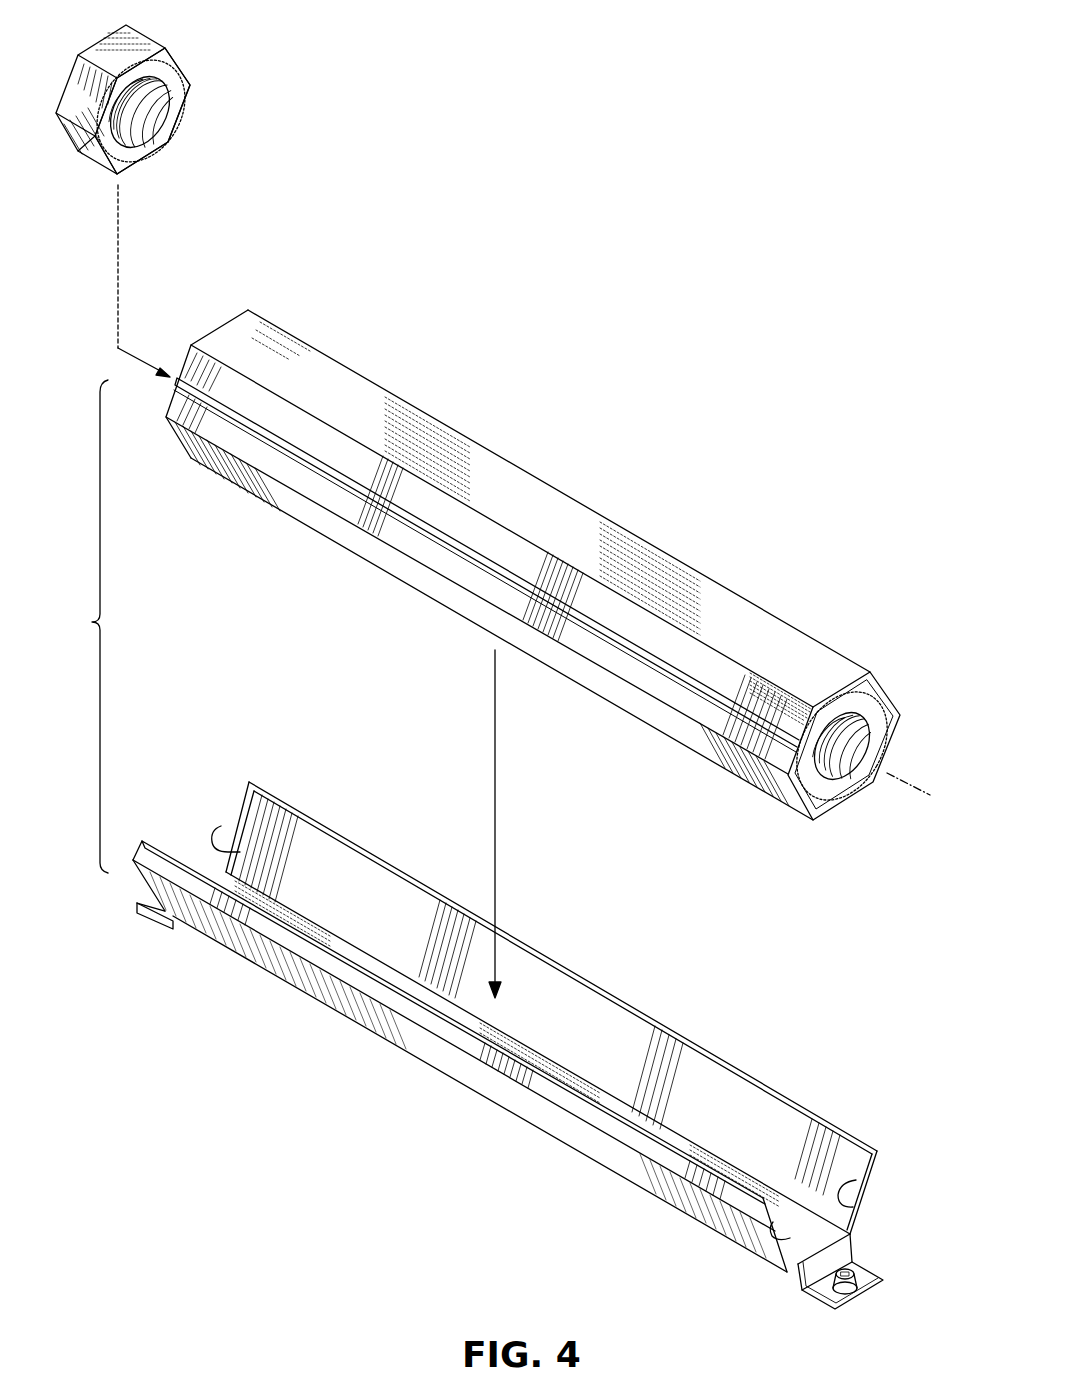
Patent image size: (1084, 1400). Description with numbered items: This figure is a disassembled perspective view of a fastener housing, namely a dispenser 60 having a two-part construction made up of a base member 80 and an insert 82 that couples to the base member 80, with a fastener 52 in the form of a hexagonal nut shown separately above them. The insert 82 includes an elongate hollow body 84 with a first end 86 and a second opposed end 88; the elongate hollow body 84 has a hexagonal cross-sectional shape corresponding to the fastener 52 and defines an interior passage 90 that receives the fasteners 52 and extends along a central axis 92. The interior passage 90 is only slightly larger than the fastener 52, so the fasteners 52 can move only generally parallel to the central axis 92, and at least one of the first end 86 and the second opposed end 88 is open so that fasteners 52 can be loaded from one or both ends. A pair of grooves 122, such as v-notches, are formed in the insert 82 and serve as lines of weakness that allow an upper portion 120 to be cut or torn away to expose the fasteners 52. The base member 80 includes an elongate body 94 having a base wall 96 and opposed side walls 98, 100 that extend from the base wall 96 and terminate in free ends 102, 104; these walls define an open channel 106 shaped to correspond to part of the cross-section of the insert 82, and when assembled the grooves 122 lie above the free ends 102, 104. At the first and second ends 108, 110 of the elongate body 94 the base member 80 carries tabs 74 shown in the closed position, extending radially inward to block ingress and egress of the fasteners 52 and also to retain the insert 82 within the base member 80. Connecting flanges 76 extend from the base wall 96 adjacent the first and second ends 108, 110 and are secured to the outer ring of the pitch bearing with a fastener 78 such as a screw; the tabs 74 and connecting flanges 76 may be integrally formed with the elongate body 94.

The fastener 52 is at (137, 48).
The dispenser 60 is at (79, 626).
The tabs 74 is at (225, 832).
The connecting flanges 76 is at (148, 918).
The fastener 78 is at (860, 1280).
The base member 80 is at (524, 1064).
The insert 82 is at (561, 562).
The elongate hollow body 84 is at (342, 372).
The first end 86 is at (893, 741).
The second opposed end 88 is at (216, 325).
The interior passage 90 is at (827, 807).
The central axis 92 is at (918, 795).
The elongate body 94 is at (440, 1062).
The base wall 96 is at (377, 970).
The side wall 98 is at (300, 975).
The side wall 100 is at (615, 1027).
The free end 102 is at (620, 1125).
The free end 104 is at (720, 1056).
The open channel 106 is at (305, 902).
The first end 108 is at (880, 1160).
The second end 110 is at (138, 852).
The upper portion 120 is at (630, 556).
The grooves 122 is at (460, 560).